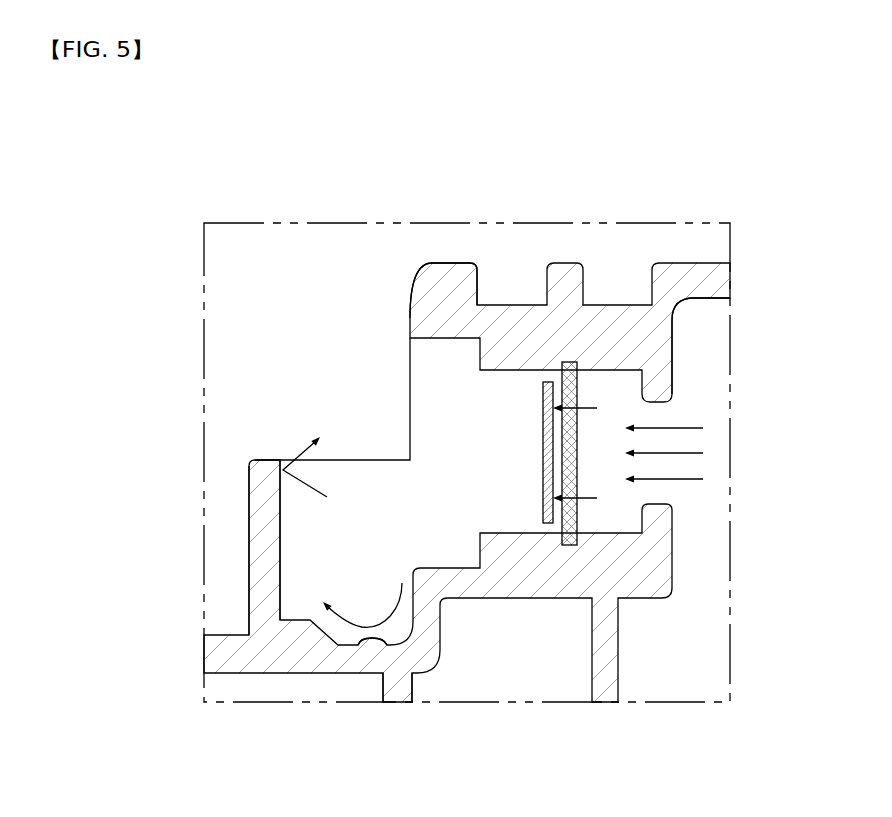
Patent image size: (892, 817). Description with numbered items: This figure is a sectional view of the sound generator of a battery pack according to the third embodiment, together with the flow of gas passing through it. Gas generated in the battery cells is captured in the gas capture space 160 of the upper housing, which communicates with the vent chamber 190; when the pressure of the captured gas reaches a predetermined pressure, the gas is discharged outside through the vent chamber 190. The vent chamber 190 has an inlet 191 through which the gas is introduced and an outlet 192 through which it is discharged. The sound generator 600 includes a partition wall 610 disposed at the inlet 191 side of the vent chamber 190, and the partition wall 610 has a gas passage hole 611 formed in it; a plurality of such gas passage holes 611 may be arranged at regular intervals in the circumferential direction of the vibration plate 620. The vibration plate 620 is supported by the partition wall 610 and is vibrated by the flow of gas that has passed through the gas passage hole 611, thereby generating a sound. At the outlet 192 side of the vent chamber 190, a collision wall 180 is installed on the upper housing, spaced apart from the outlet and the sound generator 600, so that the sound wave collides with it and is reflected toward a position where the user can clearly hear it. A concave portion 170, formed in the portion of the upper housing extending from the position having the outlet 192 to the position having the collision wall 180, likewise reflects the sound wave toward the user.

The gas capture space 160 is at (702, 348).
The concave portion 170 is at (362, 653).
The collision wall 180 is at (263, 497).
The vent chamber 190 is at (520, 350).
The inlet 191 is at (673, 400).
The outlet 192 is at (410, 337).
The sound generator 600 is at (567, 453).
The partition wall 610 is at (577, 443).
The gas passage hole 611 is at (577, 508).
The vibration plate 620 is at (548, 452).